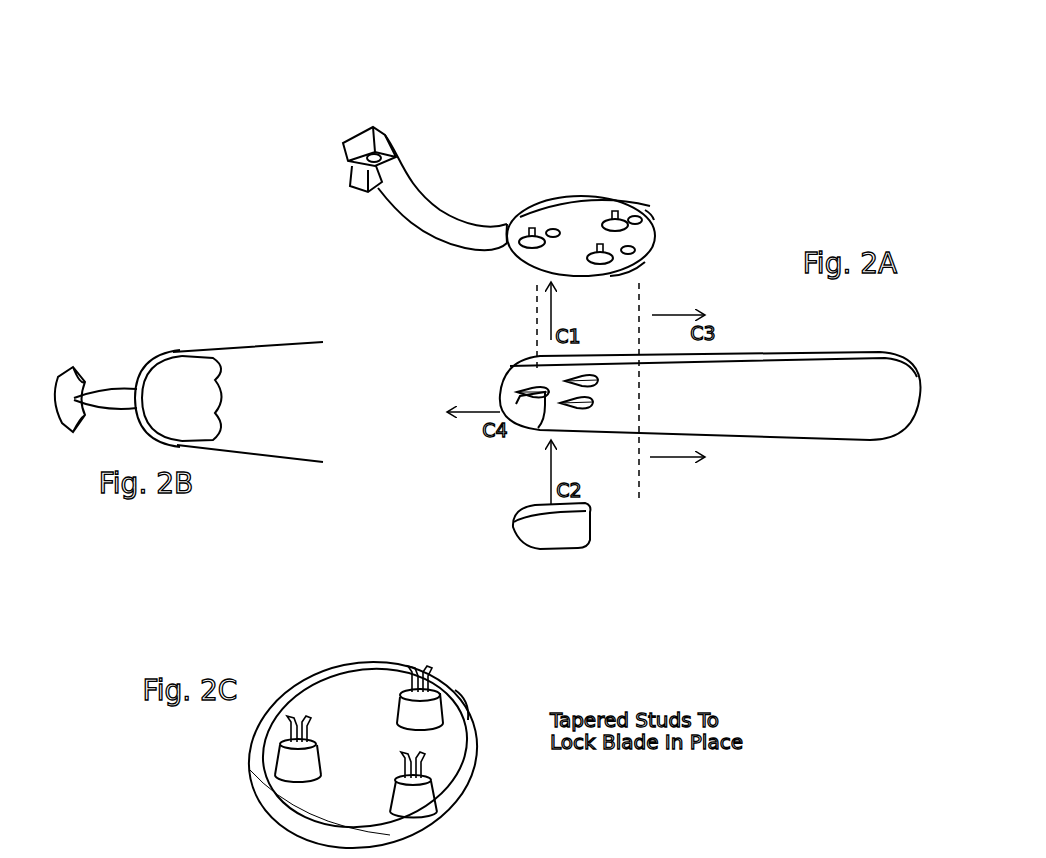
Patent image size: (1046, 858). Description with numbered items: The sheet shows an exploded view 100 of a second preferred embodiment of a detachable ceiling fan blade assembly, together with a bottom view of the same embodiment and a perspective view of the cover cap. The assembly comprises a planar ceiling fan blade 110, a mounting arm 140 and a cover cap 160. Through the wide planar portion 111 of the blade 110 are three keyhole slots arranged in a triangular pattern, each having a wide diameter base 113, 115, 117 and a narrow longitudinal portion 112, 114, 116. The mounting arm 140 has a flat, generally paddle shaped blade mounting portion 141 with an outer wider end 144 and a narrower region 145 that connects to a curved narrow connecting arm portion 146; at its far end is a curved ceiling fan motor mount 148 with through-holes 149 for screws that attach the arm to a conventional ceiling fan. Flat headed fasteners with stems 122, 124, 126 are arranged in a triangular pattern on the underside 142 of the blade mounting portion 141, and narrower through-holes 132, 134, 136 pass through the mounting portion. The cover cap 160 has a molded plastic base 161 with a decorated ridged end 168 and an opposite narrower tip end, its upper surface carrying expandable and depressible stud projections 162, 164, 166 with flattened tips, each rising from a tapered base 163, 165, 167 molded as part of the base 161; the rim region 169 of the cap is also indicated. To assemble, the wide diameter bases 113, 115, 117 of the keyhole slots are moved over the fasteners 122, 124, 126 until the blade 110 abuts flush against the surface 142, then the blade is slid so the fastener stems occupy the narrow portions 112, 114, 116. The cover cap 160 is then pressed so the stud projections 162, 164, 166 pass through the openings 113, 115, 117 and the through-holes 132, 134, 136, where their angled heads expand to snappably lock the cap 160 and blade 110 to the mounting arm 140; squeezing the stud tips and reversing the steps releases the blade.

In FIG. 2A, the exploded view of second preferred embodiment 100 is at (705, 95).
In FIG. 2A, the ceiling fan blade 110 is at (856, 416).
In FIG. 2B, the ceiling fan blade 110 is at (248, 402).
In FIG. 2A, the wide planar portion 111 is at (512, 390).
In FIG. 2A, the narrow longitudinal portion 112 is at (565, 405).
In FIG. 2A, the wide diameter base 113 is at (596, 402).
In FIG. 2A, the narrow longitudinal portion 114 is at (565, 380).
In FIG. 2A, the wide diameter base 115 is at (600, 380).
In FIG. 2A, the narrow longitudinal portion 116 is at (520, 397).
In FIG. 2A, the wide diameter base 117 is at (540, 426).
In FIG. 2A, the flat headed fastener 122 is at (604, 258).
In FIG. 2A, the flat headed fastener 124 is at (616, 225).
In FIG. 2A, the flat headed fastener 126 is at (530, 243).
In FIG. 2A, the through-hole 132 is at (635, 249).
In FIG. 2A, the through-hole 134 is at (648, 214).
In FIG. 2A, the through-hole 136 is at (555, 236).
In FIG. 2A, the mounting arm 140 is at (508, 160).
In FIG. 2A, the blade mounting portion 141 is at (640, 215).
In FIG. 2A, the underside of blade mounting portion 142 is at (560, 210).
In FIG. 2A, the outer wider end 144 is at (632, 270).
In FIG. 2A, the narrower region 145 is at (512, 223).
In FIG. 2A, the connecting arm portion 146 is at (413, 200).
In FIG. 2B, the connecting arm portion 146 is at (123, 388).
In FIG. 2A, the ceiling fan motor mount 148 is at (385, 143).
In FIG. 2B, the ceiling fan motor mount 148 is at (76, 370).
In FIG. 2A, the through-hole 149 is at (362, 177).
In FIG. 2A, the cover cap 160 is at (556, 545).
In FIG. 2B, the cover cap 160 is at (178, 398).
In FIG. 2C, the cover cap 160 is at (372, 622).
In FIG. 2C, the molded plastic base 161 is at (347, 706).
In FIG. 2C, the stud projection 162 is at (425, 770).
In FIG. 2C, the tapered base 163 is at (420, 803).
In FIG. 2C, the stud projection 164 is at (423, 668).
In FIG. 2C, the tapered base 165 is at (430, 710).
In FIG. 2C, the stud projection 166 is at (305, 735).
In FIG. 2C, the tapered base 167 is at (300, 768).
In FIG. 2C, the decorated ridged end 168 is at (465, 696).
In FIG. 2C, the cap rim 169 is at (283, 810).